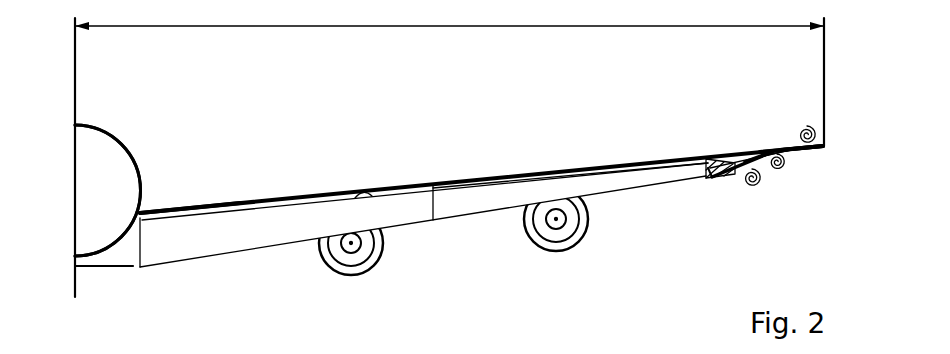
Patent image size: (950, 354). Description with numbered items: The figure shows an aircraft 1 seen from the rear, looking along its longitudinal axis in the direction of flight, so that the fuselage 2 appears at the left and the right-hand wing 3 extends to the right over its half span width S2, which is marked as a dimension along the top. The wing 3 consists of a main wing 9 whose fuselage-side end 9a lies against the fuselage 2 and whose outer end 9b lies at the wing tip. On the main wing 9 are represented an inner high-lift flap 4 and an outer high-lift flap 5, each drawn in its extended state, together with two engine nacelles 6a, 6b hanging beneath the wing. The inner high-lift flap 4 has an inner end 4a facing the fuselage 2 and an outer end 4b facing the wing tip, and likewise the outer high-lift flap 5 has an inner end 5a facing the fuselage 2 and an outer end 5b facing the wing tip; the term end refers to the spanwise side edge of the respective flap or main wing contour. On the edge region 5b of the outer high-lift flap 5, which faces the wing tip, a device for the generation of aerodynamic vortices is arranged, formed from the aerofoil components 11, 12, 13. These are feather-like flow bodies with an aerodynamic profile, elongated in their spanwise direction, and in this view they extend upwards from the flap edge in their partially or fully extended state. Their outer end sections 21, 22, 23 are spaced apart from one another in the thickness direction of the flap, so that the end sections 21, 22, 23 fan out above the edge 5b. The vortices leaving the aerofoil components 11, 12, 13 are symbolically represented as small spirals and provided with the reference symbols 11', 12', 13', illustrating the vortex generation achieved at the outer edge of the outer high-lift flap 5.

The aircraft 1 is at (138, 151).
The fuselage 2 is at (134, 190).
The wing 3 is at (457, 138).
The inner high-lift flap 4 is at (284, 243).
The inner end of inner high-lift flap 4a is at (136, 266).
The outer end of inner high-lift flap 4b is at (436, 208).
The outer high-lift flap 5 is at (605, 188).
The inner end of outer high-lift flap 5a is at (434, 193).
The outer end of outer high-lift flap 5b is at (734, 180).
The engine nacelle 6a is at (382, 250).
The engine nacelle 6b is at (523, 227).
The main wing 9 is at (518, 177).
The fuselage-side end of main wing 9a is at (147, 213).
The outer end of main wing 9b is at (811, 149).
The aerofoil component 11 is at (707, 131).
The aerofoil component 12 is at (750, 122).
The aerofoil component 13 is at (777, 116).
The end section of aerofoil component 21 is at (735, 166).
The end section of aerofoil component 22 is at (753, 150).
The end section of aerofoil component 23 is at (785, 148).
The vortex 11' is at (776, 210).
The vortex 12' is at (802, 214).
The vortex 13' is at (837, 189).
The half span width S2 is at (530, 27).